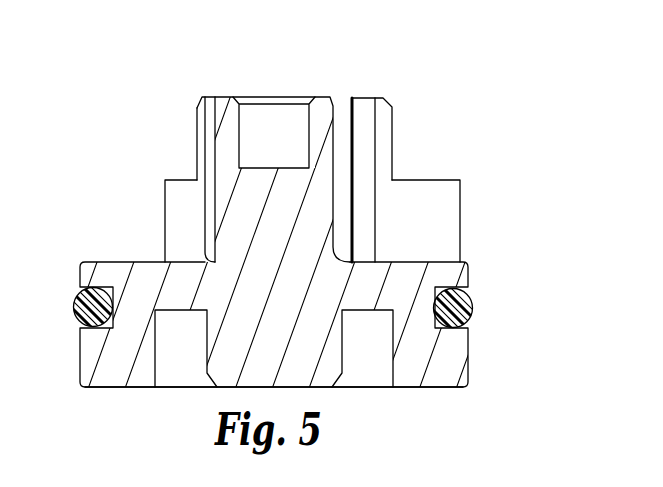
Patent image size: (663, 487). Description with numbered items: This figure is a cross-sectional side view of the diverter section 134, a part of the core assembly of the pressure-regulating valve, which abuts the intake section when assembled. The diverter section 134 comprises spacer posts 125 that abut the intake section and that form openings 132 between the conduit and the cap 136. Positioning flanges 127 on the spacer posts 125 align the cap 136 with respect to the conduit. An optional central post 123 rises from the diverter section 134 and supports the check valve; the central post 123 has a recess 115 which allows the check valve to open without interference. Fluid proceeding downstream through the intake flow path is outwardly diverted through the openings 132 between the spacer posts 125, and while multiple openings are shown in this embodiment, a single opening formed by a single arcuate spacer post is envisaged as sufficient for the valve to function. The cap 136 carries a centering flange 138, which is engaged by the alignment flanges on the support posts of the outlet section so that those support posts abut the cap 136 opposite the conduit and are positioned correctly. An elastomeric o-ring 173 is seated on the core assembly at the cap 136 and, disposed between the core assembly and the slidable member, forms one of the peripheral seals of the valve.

The diverter section 134 is at (155, 56).
The recess 115 is at (275, 97).
The central post 123 is at (327, 97).
The openings 132 is at (343, 107).
The spacer posts 125 is at (200, 142).
The positioning flanges 127 is at (178, 215).
The cap 136 is at (470, 275).
The o-ring 173 is at (473, 311).
The centering flange 138 is at (418, 388).